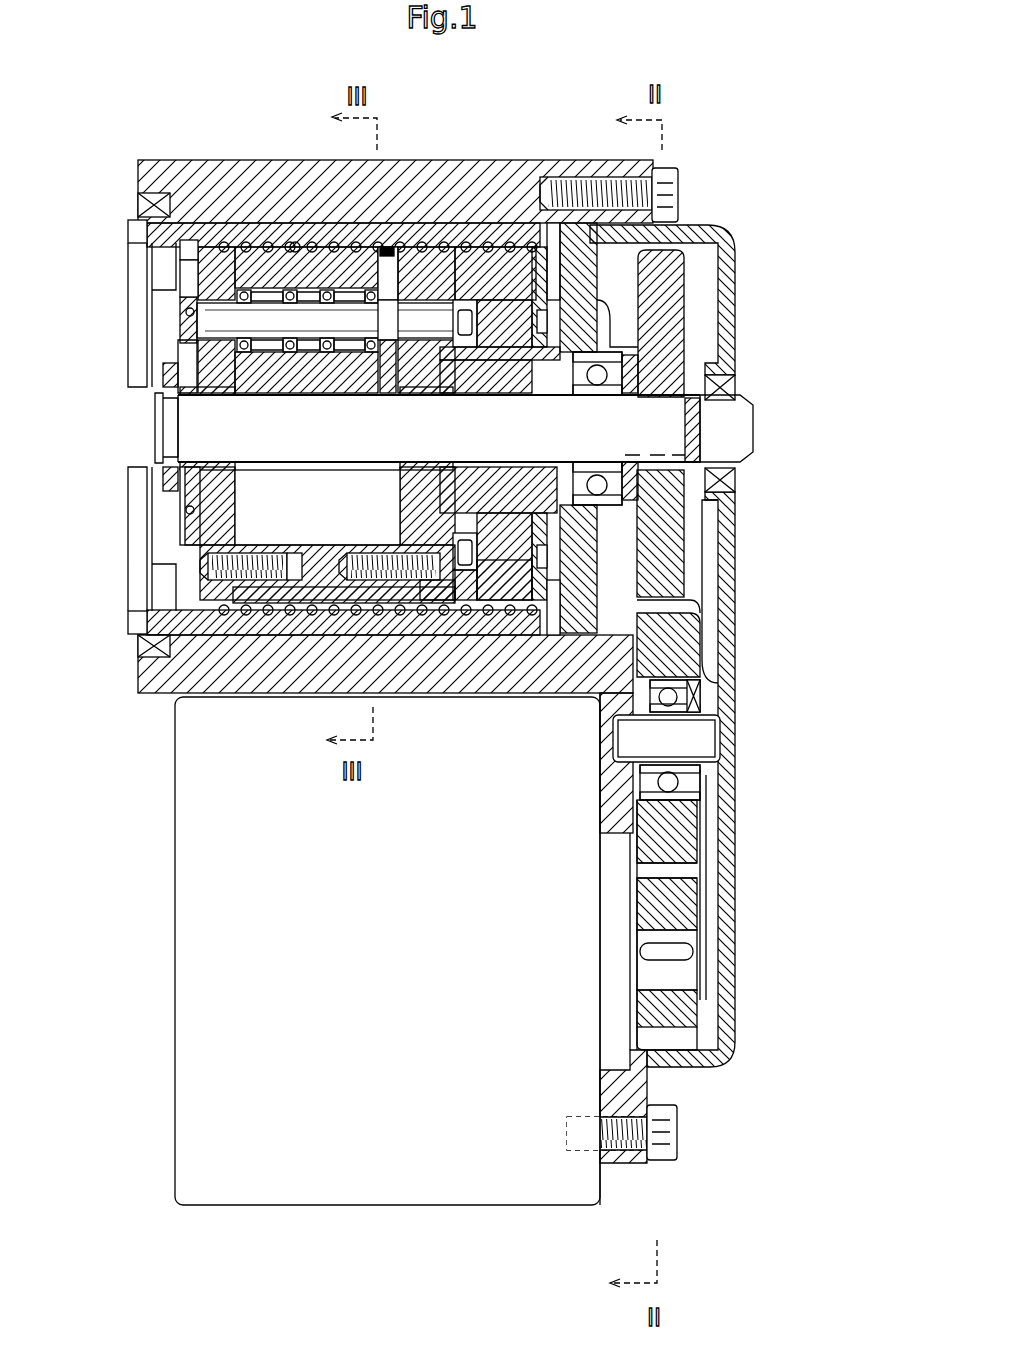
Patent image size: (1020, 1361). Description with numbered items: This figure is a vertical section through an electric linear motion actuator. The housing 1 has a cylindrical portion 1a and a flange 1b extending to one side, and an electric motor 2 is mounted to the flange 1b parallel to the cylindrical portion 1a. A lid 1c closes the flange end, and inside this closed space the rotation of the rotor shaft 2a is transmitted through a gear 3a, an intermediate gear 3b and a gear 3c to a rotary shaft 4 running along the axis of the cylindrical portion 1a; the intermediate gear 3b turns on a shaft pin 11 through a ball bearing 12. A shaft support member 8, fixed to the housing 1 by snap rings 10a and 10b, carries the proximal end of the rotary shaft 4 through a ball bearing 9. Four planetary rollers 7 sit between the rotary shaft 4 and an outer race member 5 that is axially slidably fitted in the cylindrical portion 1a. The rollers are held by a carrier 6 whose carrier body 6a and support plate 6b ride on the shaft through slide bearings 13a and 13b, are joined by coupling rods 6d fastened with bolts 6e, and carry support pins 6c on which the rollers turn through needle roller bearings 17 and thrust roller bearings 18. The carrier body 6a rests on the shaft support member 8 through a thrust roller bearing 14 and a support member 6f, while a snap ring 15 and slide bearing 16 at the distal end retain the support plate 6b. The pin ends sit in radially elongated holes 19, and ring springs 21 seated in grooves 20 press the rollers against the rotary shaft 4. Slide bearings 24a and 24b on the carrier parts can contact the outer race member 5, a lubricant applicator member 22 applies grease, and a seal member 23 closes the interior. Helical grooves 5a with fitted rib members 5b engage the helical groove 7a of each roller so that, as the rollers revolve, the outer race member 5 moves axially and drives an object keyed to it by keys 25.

The housing 1 is at (150, 161).
The cylindrical portion 1a is at (155, 675).
The flange 1b is at (615, 803).
The lid 1c is at (723, 870).
The electric motor 2 is at (198, 1080).
The rotor shaft 2a is at (687, 935).
The gear 3a is at (680, 1008).
The intermediate gear 3b is at (690, 650).
The gear 3c is at (658, 560).
The rotary shaft 4 is at (720, 440).
The outer race member 5 is at (197, 232).
The helical grooves 5a is at (277, 242).
The rib members 5b is at (295, 243).
The carrier 6 is at (392, 530).
The carrier body 6a is at (422, 600).
The support plate 6b is at (180, 510).
The support pins 6c is at (390, 260).
The coupling rods 6d is at (293, 550).
The bolts 6e is at (325, 612).
The support member 6f is at (493, 575).
The planetary rollers 7 is at (263, 258).
The helical groove 7a is at (243, 230).
The shaft support member 8 is at (684, 292).
The ball bearing 9 is at (736, 387).
The snap ring 10a is at (597, 170).
The snap ring 10b is at (558, 178).
The shaft pin 11 is at (700, 745).
The ball bearing 12 is at (700, 690).
The slide bearing 13a is at (440, 460).
The slide bearing 13b is at (200, 462).
The thrust roller bearing 14 is at (523, 215).
The snap ring 15 is at (163, 383).
The slide bearing 16 is at (163, 370).
The needle roller bearings 17 is at (340, 340).
The thrust roller bearings 18 is at (383, 375).
The radially elongated holes 19 is at (182, 318).
The grooves 20 is at (180, 340).
The radial compression ring springs 21 is at (188, 293).
The lubricant applicator member 22 is at (218, 618).
The seal member 23 is at (147, 480).
The slide bearing 24a is at (453, 230).
The slide bearing 24b is at (187, 227).
The keys 25 is at (140, 230).